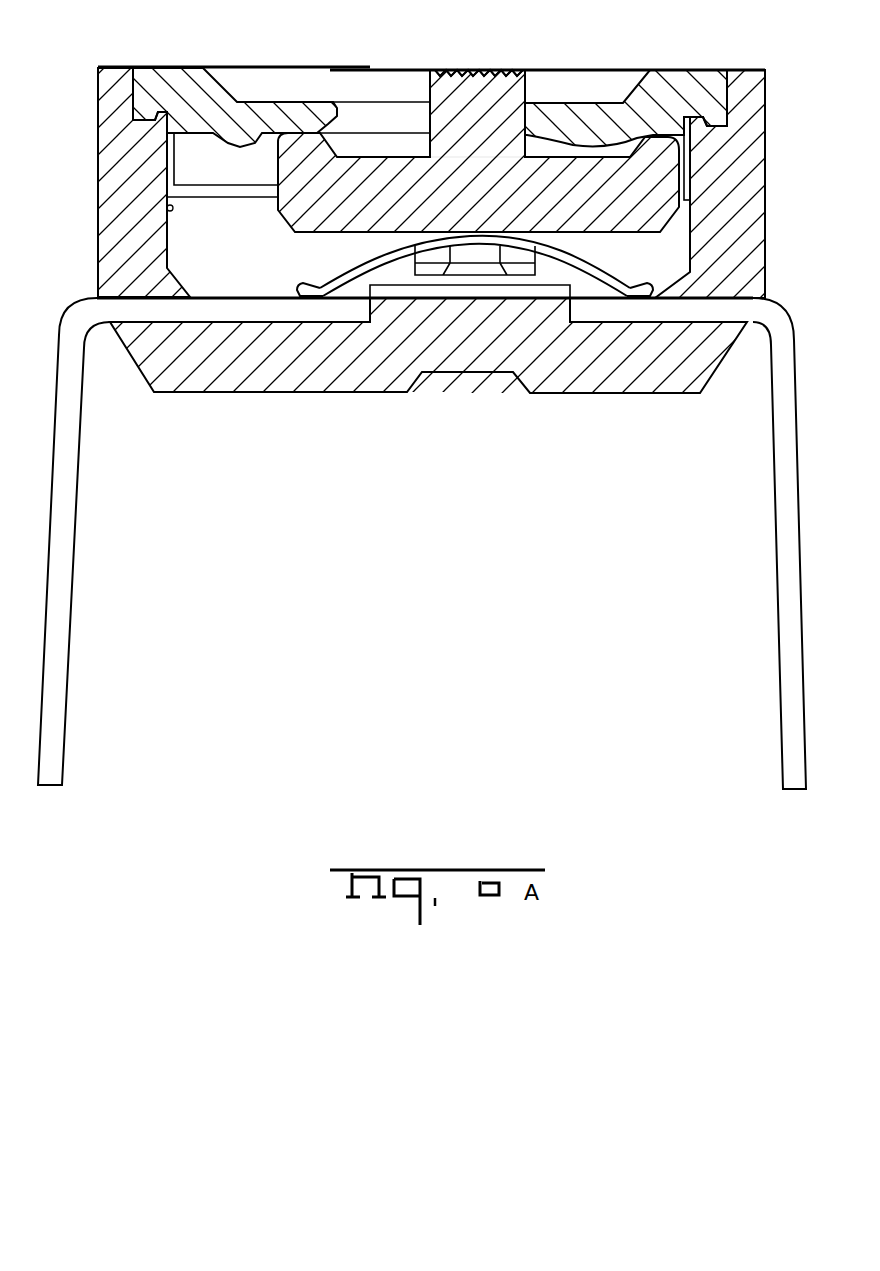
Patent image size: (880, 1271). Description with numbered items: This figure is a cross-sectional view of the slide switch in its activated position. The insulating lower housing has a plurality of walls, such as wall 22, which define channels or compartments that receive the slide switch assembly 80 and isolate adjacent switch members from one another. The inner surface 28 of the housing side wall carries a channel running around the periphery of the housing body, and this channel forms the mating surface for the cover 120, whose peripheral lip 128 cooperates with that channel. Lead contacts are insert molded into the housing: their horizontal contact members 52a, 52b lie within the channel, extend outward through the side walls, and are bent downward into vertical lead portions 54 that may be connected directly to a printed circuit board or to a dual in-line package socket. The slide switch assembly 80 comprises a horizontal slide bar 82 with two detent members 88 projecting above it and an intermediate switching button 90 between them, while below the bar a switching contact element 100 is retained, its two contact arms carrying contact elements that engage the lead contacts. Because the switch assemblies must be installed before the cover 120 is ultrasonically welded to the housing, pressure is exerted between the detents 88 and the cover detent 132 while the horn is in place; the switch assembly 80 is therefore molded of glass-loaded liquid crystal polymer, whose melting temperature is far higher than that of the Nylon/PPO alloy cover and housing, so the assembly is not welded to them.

The wall 22 is at (246, 273).
The inner surface of side wall 28 is at (166, 208).
The horizontal contact member 52a is at (243, 313).
The horizontal contact member 52b is at (618, 315).
The vertical lead portion 54 is at (63, 611).
The slide switch assembly 80 is at (428, 109).
The horizontal slide bar 82 is at (292, 188).
The detent member 88 is at (680, 170).
The switching button 90 is at (470, 70).
The switching contact element 100 is at (628, 288).
The cover 120 is at (193, 67).
The peripheral lip 128 is at (698, 117).
The detent 132 is at (243, 147).